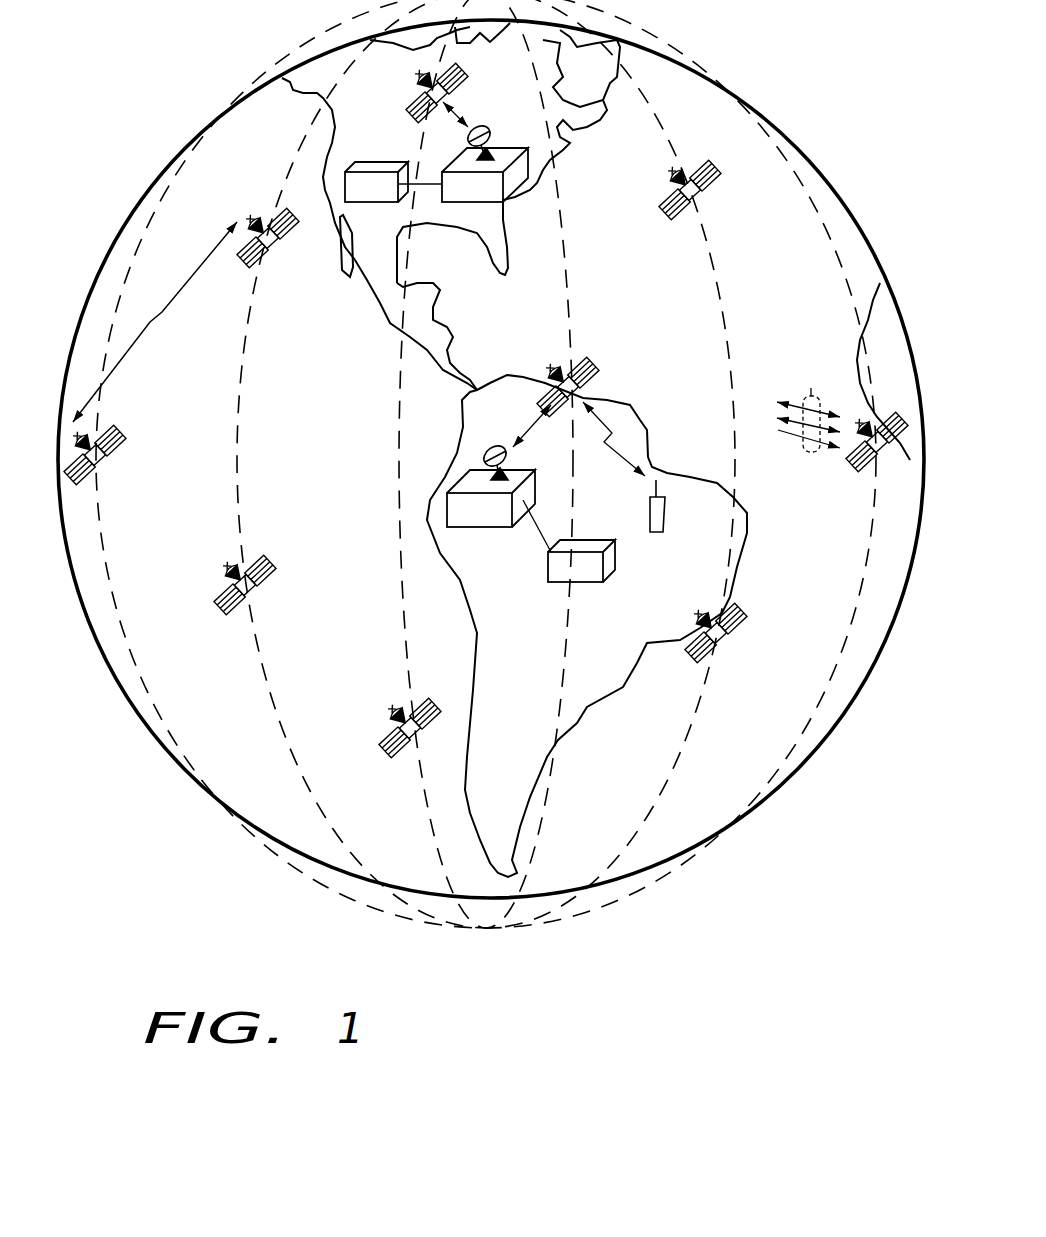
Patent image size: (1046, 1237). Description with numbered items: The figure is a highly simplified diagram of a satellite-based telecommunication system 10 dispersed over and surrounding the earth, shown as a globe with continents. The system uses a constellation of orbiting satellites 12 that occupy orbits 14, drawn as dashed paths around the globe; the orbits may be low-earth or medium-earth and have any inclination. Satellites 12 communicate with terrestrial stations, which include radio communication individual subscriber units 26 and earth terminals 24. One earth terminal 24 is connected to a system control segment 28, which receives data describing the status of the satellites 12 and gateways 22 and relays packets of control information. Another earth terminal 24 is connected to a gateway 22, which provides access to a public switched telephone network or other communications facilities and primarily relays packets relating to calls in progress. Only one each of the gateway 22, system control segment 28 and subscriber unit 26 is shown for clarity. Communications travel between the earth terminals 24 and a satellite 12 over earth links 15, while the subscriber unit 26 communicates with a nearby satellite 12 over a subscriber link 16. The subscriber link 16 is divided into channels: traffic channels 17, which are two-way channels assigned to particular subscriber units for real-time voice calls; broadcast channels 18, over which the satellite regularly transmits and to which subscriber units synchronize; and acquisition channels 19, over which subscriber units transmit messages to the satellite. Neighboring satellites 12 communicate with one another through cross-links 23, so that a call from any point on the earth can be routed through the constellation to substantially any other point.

The satellite-based telecommunication system 10 is at (475, 1030).
The satellite 12 is at (415, 118).
The orbit 14 is at (298, 156).
The earth link 15 is at (527, 432).
The subscriber link 16 is at (608, 422).
The traffic channel 17 is at (805, 400).
The broadcast channel 18 is at (781, 412).
The acquisition channel 19 is at (803, 440).
The gateway 22 is at (588, 586).
The cross-link 23 is at (158, 318).
The earth terminal 24 is at (508, 146).
The individual subscriber unit 26 is at (660, 534).
The system control segment 28 is at (360, 203).